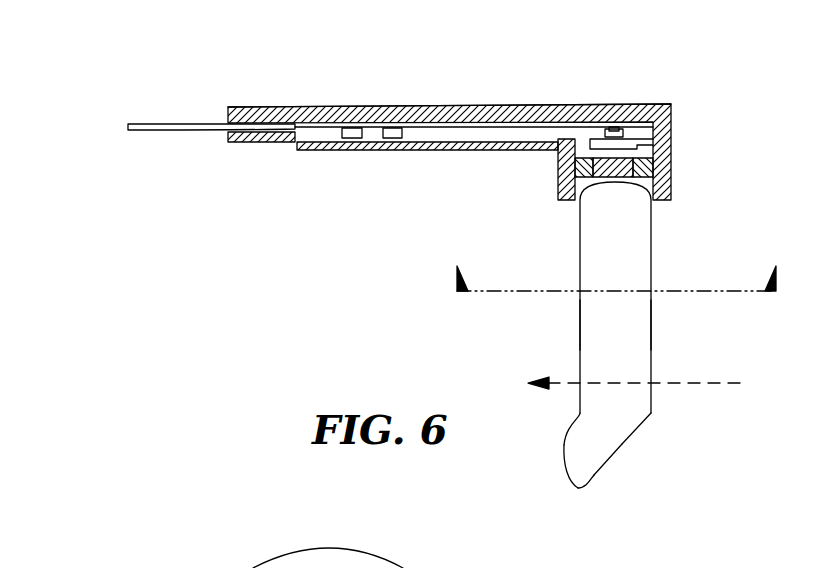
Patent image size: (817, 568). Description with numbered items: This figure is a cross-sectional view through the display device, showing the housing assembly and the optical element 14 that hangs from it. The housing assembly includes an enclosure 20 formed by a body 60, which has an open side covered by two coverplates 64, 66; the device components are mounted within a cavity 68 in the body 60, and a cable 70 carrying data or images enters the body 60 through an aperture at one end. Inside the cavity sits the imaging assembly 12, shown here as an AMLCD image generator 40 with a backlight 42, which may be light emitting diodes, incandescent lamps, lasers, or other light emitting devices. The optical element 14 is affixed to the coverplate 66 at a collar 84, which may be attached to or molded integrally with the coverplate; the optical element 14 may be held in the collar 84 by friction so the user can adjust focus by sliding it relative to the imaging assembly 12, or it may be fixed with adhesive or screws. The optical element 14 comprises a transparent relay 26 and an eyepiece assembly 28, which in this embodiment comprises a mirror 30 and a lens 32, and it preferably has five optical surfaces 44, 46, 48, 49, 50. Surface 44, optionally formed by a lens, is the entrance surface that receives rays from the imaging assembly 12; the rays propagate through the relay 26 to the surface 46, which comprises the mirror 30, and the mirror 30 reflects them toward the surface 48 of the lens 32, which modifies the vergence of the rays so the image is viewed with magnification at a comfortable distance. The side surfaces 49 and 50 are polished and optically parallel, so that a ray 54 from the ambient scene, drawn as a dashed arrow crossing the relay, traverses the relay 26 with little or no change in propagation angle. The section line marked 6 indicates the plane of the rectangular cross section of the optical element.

The imaging assembly 12 is at (688, 122).
The enclosure 20 is at (490, 105).
The body 60 is at (335, 118).
The cable 70 is at (170, 123).
The coverplate 64 is at (320, 150).
The cavity 68 is at (403, 127).
The backlight 42 is at (615, 128).
The AMLCD image generator 40 is at (630, 143).
The coverplate 66 is at (672, 168).
The optical surface 44 is at (558, 175).
The collar 84 is at (558, 187).
The section line 6- 6 is at (617, 262).
The relay 26 is at (643, 352).
The optical surface 49 is at (580, 325).
The optical surface 50 is at (651, 315).
The ray 54 is at (654, 383).
The optical element 14 is at (643, 474).
The optical surface 48 is at (570, 428).
The lens 32 is at (560, 457).
The eyepiece assembly 28 is at (588, 463).
The optical surface 46 is at (617, 453).
The mirror 30 is at (642, 425).